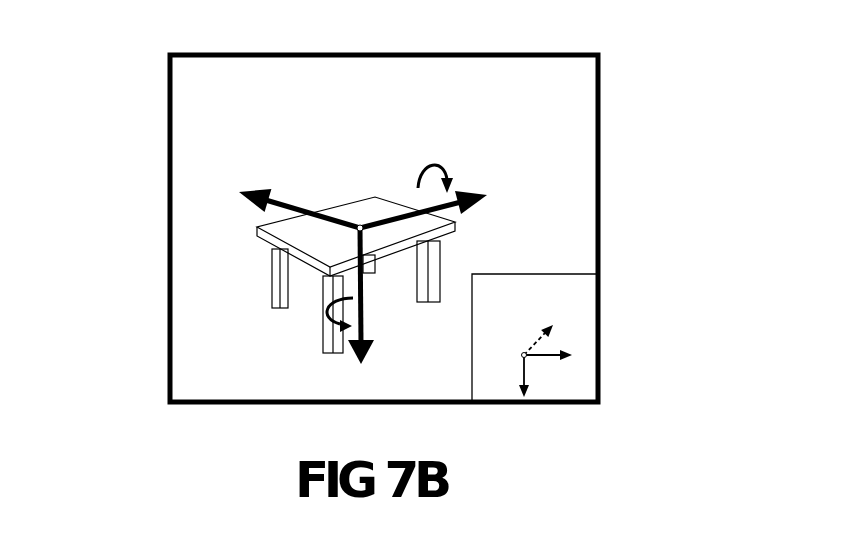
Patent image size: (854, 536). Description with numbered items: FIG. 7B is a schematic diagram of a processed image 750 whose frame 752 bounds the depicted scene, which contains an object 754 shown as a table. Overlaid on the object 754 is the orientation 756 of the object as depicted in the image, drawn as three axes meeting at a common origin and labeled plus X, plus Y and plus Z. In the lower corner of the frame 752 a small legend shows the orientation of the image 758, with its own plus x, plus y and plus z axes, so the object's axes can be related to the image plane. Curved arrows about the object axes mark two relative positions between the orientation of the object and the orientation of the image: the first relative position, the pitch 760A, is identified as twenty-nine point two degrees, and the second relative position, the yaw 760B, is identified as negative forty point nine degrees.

The image with overlaid 3D bounding/pose annotation 750 is at (536, 32).
The image frame 752 is at (167, 105).
The object 754 is at (272, 268).
The orientation of the object 756 is at (297, 209).
The orientation of the image 758 is at (567, 339).
The first relative position (pitch) 760A is at (530, 153).
The second relative position (yaw) 760B is at (225, 335).